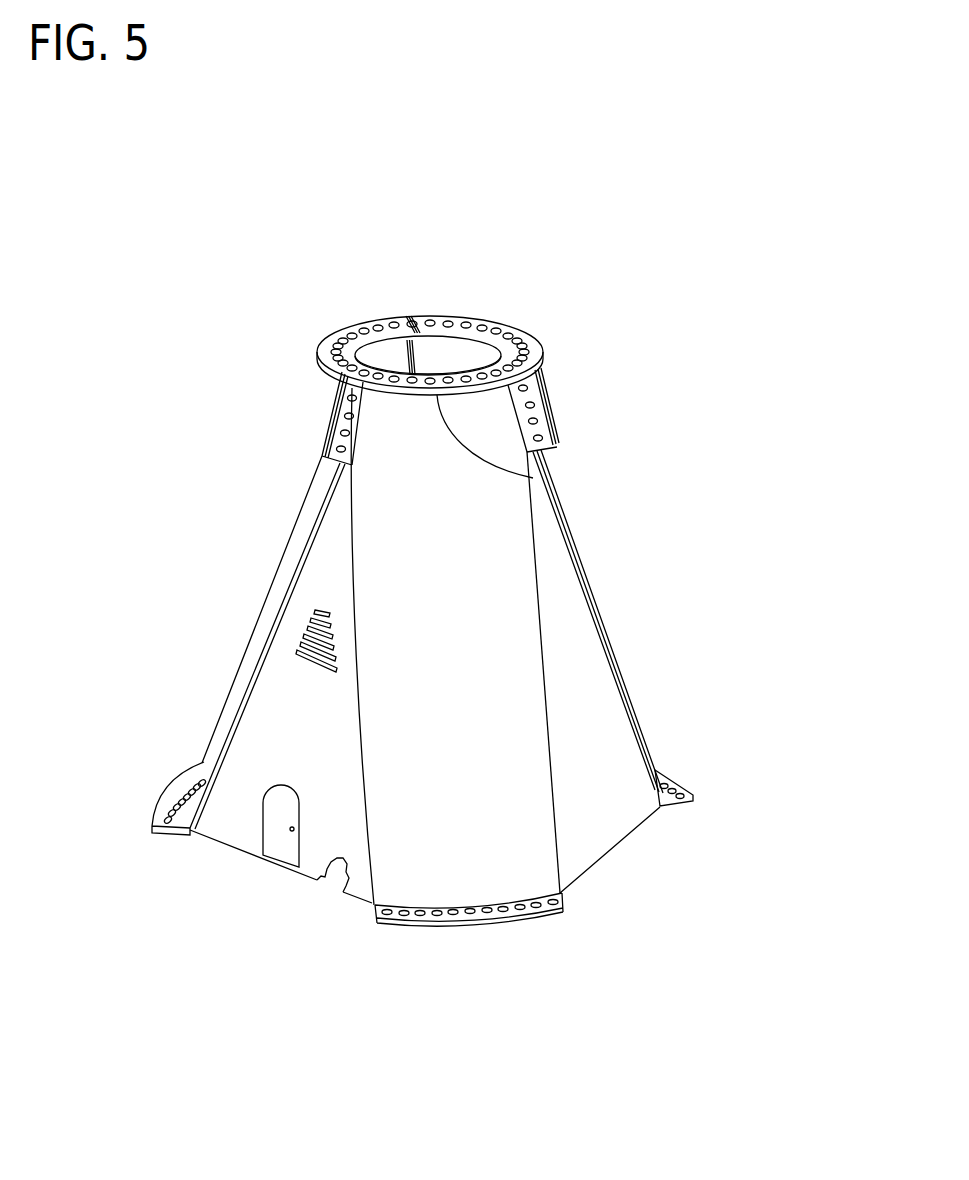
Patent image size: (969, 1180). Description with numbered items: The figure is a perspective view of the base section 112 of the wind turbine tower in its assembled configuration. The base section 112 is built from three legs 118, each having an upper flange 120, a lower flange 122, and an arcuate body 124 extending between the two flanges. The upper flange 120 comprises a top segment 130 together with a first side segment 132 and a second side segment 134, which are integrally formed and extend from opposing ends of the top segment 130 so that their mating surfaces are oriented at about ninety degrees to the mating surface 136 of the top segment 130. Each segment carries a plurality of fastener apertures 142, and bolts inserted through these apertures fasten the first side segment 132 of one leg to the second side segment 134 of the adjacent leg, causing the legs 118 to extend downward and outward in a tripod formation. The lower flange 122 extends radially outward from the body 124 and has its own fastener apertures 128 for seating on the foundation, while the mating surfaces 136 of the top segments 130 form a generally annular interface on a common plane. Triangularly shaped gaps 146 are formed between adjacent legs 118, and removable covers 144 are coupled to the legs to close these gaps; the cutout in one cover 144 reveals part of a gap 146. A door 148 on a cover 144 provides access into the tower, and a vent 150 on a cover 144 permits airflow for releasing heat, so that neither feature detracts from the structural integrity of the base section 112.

The base section 112 is at (161, 258).
The leg 118 is at (153, 788).
The upper flange 120 is at (469, 368).
The lower flange 122 is at (507, 926).
The body 124 is at (478, 597).
The fastener apertures 128 is at (454, 915).
The top segment 130 is at (533, 478).
The first side segment 132 is at (543, 434).
The second side segment 134 is at (341, 403).
The mating surface 136 is at (433, 388).
The fastener apertures 142 is at (372, 378).
The cover 144 is at (227, 818).
The gap 146 is at (333, 877).
The door 148 is at (280, 863).
The vent 150 is at (305, 621).